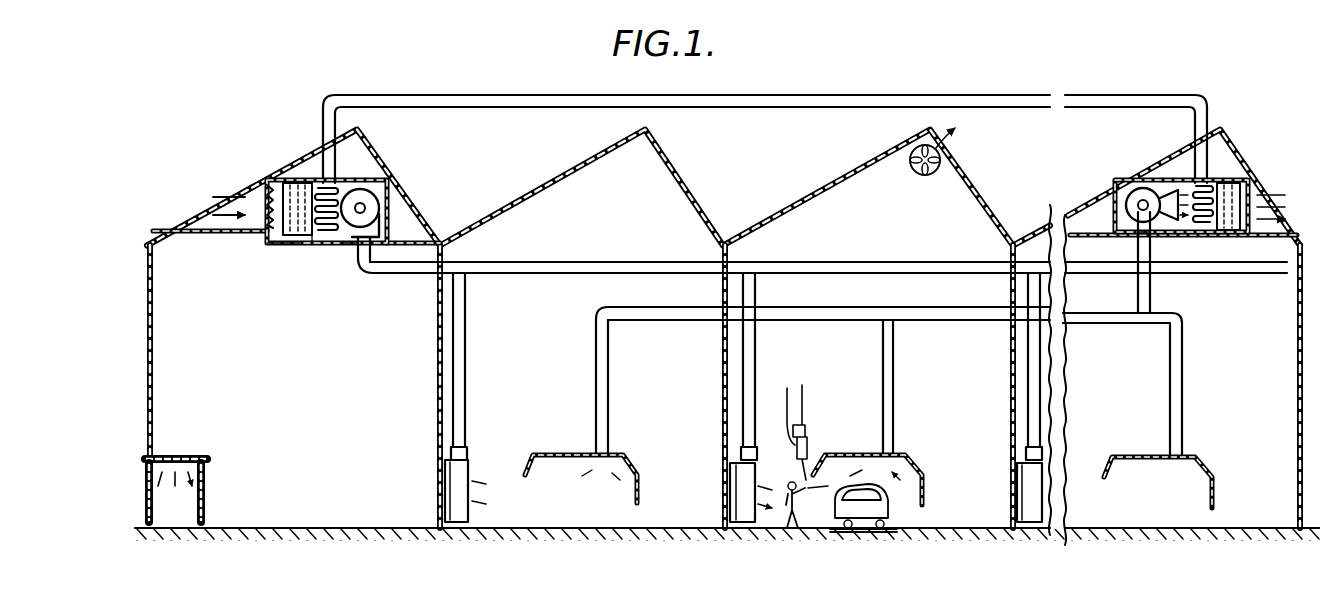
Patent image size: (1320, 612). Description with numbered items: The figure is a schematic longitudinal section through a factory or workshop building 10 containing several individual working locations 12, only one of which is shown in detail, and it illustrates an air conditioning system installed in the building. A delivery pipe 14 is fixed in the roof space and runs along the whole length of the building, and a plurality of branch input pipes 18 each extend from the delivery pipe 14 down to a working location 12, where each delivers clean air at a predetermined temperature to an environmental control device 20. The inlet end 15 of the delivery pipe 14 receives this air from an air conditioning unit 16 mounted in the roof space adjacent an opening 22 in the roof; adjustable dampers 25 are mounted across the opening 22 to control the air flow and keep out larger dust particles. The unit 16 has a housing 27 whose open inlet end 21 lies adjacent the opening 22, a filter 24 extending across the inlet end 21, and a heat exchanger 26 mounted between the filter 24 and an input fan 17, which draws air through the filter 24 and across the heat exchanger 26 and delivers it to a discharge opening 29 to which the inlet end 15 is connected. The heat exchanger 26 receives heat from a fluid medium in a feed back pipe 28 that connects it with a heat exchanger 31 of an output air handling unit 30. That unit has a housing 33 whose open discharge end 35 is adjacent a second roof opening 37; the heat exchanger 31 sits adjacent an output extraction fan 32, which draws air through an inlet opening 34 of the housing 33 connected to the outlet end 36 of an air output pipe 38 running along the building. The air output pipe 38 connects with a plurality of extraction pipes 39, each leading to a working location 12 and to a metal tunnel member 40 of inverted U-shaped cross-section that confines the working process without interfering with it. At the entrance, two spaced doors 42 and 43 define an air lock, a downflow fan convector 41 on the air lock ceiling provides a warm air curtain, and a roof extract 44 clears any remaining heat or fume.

The factory building 10 is at (566, 545).
The working location 12 is at (901, 516).
The delivery pipe 14 is at (518, 263).
The inlet end 15 is at (362, 255).
The air conditioning unit 16 is at (401, 213).
The input fan 17 is at (366, 204).
The branch input pipe 18 is at (460, 392).
The environmental control device 20 is at (478, 516).
The inlet end 21 is at (267, 240).
The opening 22 is at (267, 193).
The filter 24 is at (288, 182).
The adjustable dampers 25 is at (262, 200).
The heat exchanger 26 is at (312, 232).
The housing 27 is at (313, 186).
The feed back pipe 28 is at (733, 106).
The discharge opening 29 is at (347, 240).
The output air handling unit 30 is at (1147, 187).
The heat exchanger 31 is at (1212, 182).
The output extraction fan 32 is at (1140, 198).
The housing 33 is at (1113, 212).
The inlet opening 34 is at (1141, 238).
The discharge end 35 is at (1238, 230).
The outlet end 36 is at (1151, 295).
The opening 37 is at (1232, 218).
The air output pipe 38 is at (918, 307).
The extraction pipe 39 is at (605, 412).
The tunnel member 40 is at (672, 456).
The downflow fan convector 41 is at (183, 462).
The door 42 is at (162, 512).
The door 43 is at (218, 512).
The roof extract 44 is at (942, 169).